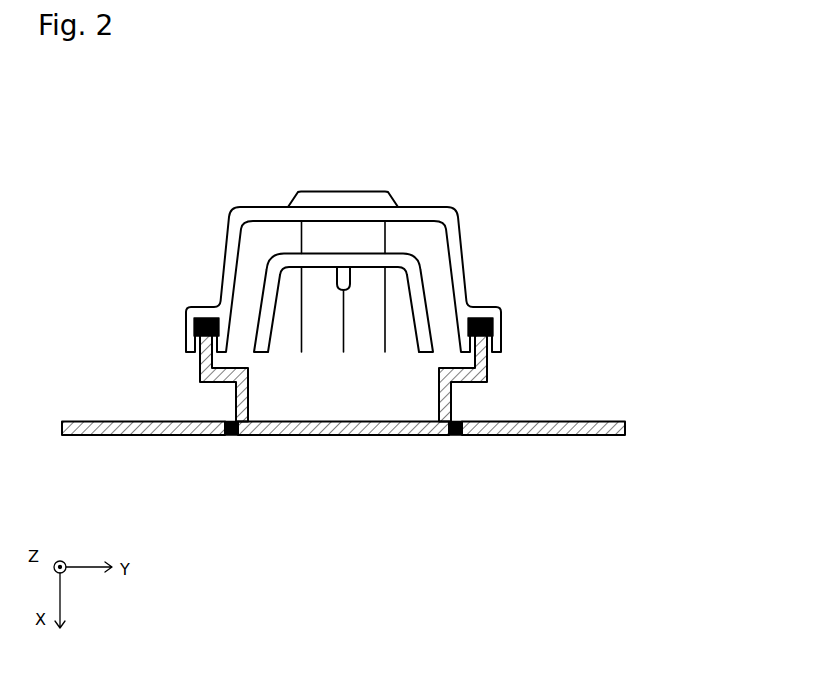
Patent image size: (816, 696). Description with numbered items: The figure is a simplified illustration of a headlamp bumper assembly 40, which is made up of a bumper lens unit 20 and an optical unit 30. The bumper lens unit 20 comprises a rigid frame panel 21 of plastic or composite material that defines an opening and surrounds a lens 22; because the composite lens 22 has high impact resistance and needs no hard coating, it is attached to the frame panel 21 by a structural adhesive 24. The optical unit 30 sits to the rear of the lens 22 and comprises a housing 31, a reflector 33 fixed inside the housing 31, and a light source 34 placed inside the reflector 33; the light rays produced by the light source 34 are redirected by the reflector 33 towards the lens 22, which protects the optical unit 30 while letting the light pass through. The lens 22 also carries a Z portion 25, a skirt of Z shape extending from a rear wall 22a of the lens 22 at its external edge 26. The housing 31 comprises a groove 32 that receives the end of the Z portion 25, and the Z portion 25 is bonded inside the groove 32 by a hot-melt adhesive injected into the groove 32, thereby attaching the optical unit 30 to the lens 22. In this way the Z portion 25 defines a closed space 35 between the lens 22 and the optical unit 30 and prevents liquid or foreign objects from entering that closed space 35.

The bumper lens unit 20 is at (310, 527).
The frame panel 21 is at (157, 436).
The lens 22 is at (290, 437).
The rear wall 22a is at (339, 412).
The structural adhesive 24 is at (460, 437).
The Z portion 25 is at (205, 372).
The external edge 26 is at (238, 438).
The optical unit 30 is at (233, 133).
The housing 31 is at (418, 213).
The groove 32 is at (490, 370).
The reflector 33 is at (422, 290).
The light source 34 is at (337, 278).
The closed space 35 is at (305, 388).
The headlamp bumper assembly 40 is at (118, 168).